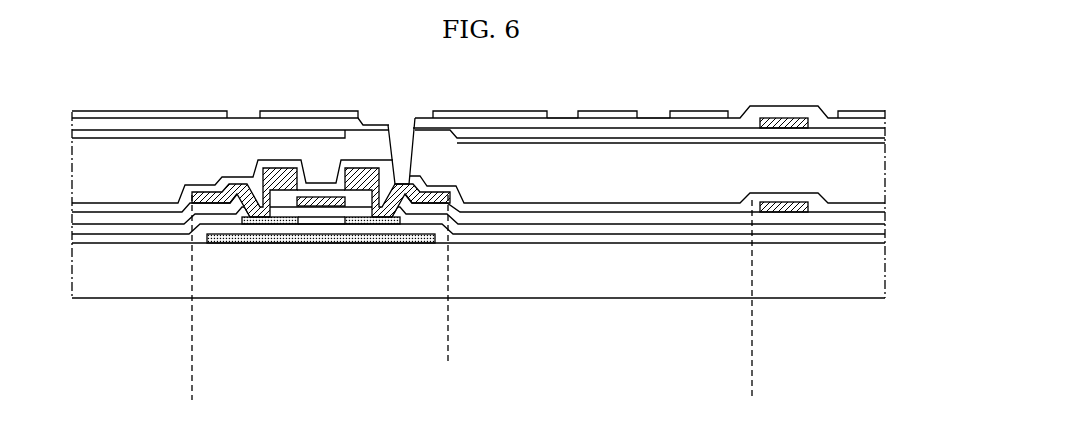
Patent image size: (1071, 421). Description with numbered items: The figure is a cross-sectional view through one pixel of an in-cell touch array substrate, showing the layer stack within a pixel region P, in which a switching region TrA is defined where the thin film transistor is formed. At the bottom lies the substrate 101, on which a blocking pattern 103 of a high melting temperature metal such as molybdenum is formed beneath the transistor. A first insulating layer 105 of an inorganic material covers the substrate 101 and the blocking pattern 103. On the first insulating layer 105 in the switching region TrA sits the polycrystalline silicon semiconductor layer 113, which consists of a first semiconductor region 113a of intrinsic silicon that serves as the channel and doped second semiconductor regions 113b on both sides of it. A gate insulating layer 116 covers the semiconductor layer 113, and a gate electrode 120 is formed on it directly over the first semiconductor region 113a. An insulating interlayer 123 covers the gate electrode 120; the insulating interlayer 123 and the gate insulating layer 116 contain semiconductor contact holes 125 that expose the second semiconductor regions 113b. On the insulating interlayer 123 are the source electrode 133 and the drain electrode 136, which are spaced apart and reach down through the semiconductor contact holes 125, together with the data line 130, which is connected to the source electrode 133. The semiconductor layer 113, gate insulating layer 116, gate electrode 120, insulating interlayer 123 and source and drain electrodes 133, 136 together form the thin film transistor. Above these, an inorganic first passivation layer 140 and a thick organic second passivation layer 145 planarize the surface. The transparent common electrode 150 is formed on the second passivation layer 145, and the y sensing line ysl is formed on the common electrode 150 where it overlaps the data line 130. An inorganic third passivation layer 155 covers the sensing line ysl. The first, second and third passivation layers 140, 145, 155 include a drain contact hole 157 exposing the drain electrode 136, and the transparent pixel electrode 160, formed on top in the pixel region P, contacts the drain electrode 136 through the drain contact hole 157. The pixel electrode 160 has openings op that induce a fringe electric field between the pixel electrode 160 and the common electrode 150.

The substrate 101 is at (880, 286).
The blocking pattern 103 is at (393, 244).
The first insulating layer 105 is at (511, 236).
The semiconductor layer 113 is at (321, 271).
The first semiconductor region 113a is at (316, 225).
The second semiconductor region 113b is at (280, 226).
The gate insulating layer 116 is at (563, 228).
The gate electrode 120 is at (323, 197).
The insulating interlayer 123 is at (628, 218).
The semiconductor contact hole 125 is at (257, 177).
The data line 130 is at (788, 213).
The source electrode 133 is at (223, 182).
The drain electrode 136 is at (348, 168).
The first passivation layer 140 is at (687, 207).
The second passivation layer 145 is at (723, 195).
The common electrode 150 is at (520, 133).
The third passivation layer 155 is at (738, 124).
The drain contact hole 157 is at (123, 135).
The pixel electrode 160 is at (195, 112).
The y sensing line ysl is at (780, 120).
The opening op is at (566, 104).
The switching region TrA is at (448, 357).
The pixel region P is at (192, 392).